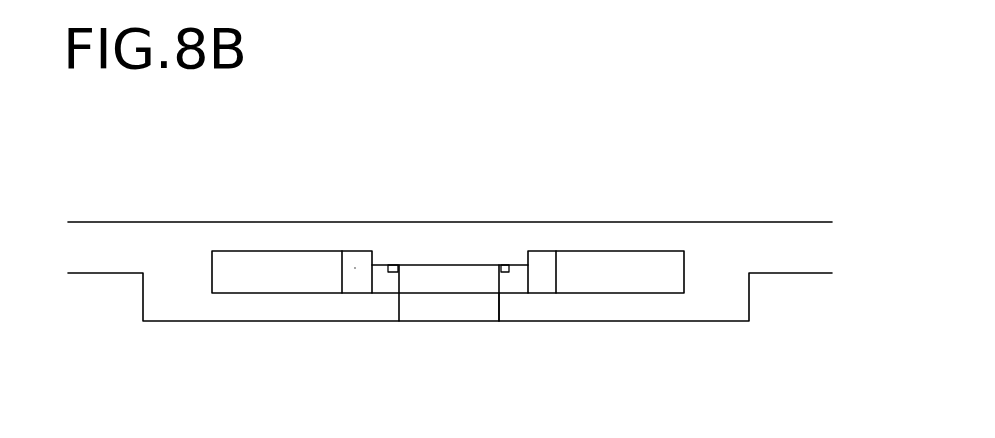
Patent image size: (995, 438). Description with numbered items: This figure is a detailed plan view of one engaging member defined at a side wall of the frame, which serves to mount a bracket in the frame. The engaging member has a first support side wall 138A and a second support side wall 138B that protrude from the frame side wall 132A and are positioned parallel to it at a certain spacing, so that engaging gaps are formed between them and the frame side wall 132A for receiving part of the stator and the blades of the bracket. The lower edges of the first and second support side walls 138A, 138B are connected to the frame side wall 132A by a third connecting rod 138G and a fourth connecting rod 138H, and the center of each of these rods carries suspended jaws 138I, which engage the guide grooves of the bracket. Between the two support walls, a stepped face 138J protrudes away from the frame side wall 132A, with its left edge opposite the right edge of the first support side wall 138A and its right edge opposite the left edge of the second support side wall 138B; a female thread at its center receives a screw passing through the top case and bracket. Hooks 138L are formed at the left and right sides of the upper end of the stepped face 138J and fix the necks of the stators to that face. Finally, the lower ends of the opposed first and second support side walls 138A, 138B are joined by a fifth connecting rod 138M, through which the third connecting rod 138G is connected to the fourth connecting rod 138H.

The frame side wall 132A is at (175, 240).
The first support side wall 138A is at (273, 306).
The second support side wall 138B is at (612, 306).
The third connecting rod 138G is at (385, 282).
The fourth connecting rod 138H is at (507, 283).
The suspended jaws 138I is at (537, 267).
The stepped face 138J is at (437, 255).
The hooks 138L is at (507, 260).
The fifth connecting rod 138M is at (472, 282).